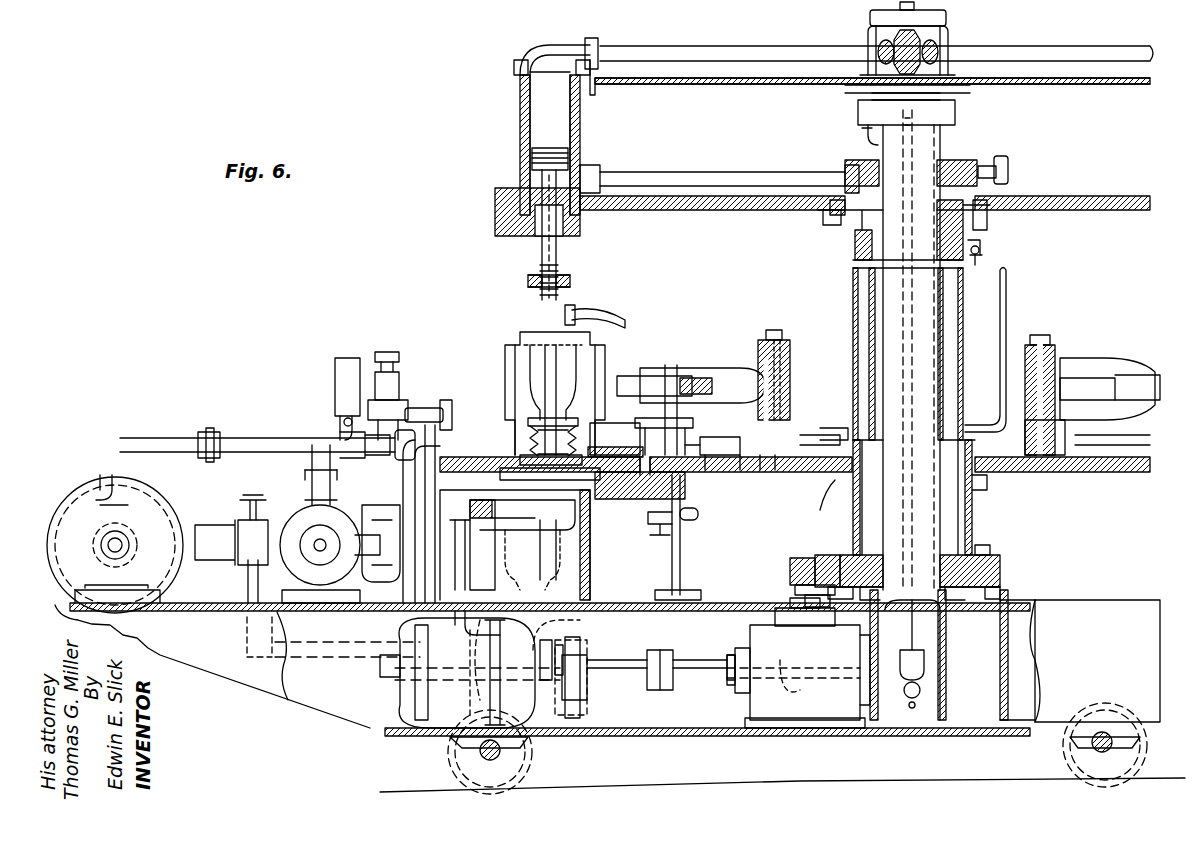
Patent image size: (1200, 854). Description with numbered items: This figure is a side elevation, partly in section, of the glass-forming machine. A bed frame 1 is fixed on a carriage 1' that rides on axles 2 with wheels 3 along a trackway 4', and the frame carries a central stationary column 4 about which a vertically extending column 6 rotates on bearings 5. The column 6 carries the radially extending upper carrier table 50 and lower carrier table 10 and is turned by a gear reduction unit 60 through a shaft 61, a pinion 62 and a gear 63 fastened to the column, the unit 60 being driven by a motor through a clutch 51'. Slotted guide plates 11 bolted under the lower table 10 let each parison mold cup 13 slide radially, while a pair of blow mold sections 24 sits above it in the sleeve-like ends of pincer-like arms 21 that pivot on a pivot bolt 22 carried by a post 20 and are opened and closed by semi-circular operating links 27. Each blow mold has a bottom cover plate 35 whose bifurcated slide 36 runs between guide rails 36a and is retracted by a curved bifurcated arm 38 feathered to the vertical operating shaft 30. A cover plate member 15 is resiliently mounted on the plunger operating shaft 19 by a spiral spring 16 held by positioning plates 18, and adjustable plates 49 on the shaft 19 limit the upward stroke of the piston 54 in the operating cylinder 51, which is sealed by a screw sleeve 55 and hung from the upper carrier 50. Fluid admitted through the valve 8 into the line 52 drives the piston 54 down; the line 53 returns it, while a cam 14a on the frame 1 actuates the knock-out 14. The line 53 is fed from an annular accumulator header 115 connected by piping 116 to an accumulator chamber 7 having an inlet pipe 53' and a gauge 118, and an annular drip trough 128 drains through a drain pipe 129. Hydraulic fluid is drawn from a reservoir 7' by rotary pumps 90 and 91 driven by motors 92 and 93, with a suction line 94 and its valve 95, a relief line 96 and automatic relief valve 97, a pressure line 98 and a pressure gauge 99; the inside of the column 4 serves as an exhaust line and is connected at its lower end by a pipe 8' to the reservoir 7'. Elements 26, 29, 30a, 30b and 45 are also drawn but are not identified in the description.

The bed frame 1 is at (550, 617).
The carriage 1' is at (707, 746).
The axles 2 is at (480, 755).
The wheels 3 is at (580, 548).
The stationary column 4 is at (879, 350).
The trackway 4' is at (782, 772).
The bearings 5 is at (845, 218).
The vertically extending column 6 is at (975, 505).
The accumulator chamber 7 is at (891, 350).
The reservoir 7' is at (1015, 656).
The valve 8 is at (908, 46).
The pipe 8' is at (901, 680).
The lower carrier table 10 is at (830, 490).
The slotted guide plate 11 is at (678, 490).
The parison mold cup 13 is at (525, 535).
The knock-out 14 is at (545, 615).
The cam 14a is at (550, 603).
The cover plate member 15 is at (520, 462).
The spiral positioning spring 16 is at (532, 438).
The positioning plates 18 is at (540, 412).
The plunger operating shaft 19 is at (556, 246).
The post 20 is at (828, 448).
The blow mold section support arm 21 is at (716, 372).
The pivot bolt 22 is at (775, 348).
The blow mold section 24 is at (515, 368).
The link 26 is at (668, 365).
The semi-circular operating link 27 is at (700, 386).
The collar 29 is at (693, 422).
The vertical operating shaft 30 is at (682, 510).
The rod fitting 30a is at (685, 520).
The rod foot 30b is at (680, 560).
The bottom cover plate 35 is at (600, 438).
The bifurcated slide arm 36 is at (720, 470).
The guide rail 36a is at (765, 470).
The curved bifurcated operating arm 38 is at (715, 438).
The hose 45 is at (616, 315).
The adjustable plate 49 is at (528, 281).
The upper carrier table 50 is at (750, 215).
The operating cylinder 51 is at (810, 130).
The clutch 51' is at (574, 699).
The telescopic pressure line 52 is at (730, 52).
The telescopic line 53 is at (719, 170).
The inlet pipe 53' is at (831, 421).
The piston 54 is at (532, 162).
The screw sleeve 55 is at (495, 222).
The gear reduction unit 60 is at (778, 650).
The shaft 61 is at (795, 592).
The pinion 62 is at (792, 558).
The gear 63 is at (825, 560).
The rotary pump 90 is at (95, 490).
The rotary pump 91 is at (302, 515).
The motor 92 is at (540, 518).
The motor 93 is at (585, 570).
The suction line 94 is at (590, 700).
The valve 95 is at (240, 520).
The relief line 96 is at (580, 622).
The automatic relief valve 97 is at (398, 372).
The pressure line 98 is at (996, 330).
The pressure gauge 99 is at (335, 382).
The annular accumulator header 115 is at (938, 162).
The piping 116 is at (1008, 292).
The gauge 118 is at (985, 250).
The drip trough 128 is at (955, 106).
The drain pipe 129 is at (866, 140).